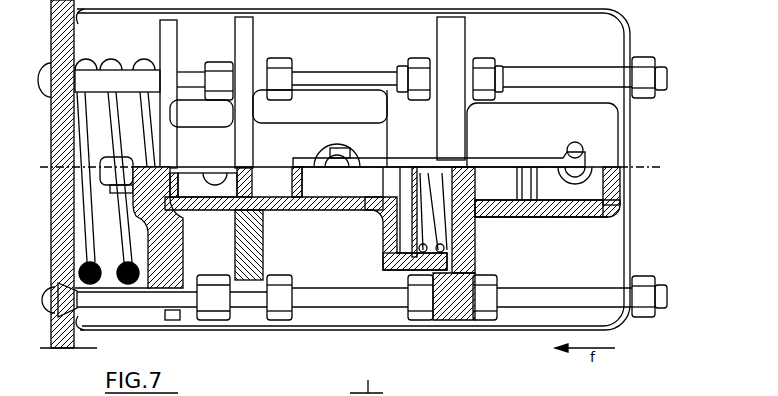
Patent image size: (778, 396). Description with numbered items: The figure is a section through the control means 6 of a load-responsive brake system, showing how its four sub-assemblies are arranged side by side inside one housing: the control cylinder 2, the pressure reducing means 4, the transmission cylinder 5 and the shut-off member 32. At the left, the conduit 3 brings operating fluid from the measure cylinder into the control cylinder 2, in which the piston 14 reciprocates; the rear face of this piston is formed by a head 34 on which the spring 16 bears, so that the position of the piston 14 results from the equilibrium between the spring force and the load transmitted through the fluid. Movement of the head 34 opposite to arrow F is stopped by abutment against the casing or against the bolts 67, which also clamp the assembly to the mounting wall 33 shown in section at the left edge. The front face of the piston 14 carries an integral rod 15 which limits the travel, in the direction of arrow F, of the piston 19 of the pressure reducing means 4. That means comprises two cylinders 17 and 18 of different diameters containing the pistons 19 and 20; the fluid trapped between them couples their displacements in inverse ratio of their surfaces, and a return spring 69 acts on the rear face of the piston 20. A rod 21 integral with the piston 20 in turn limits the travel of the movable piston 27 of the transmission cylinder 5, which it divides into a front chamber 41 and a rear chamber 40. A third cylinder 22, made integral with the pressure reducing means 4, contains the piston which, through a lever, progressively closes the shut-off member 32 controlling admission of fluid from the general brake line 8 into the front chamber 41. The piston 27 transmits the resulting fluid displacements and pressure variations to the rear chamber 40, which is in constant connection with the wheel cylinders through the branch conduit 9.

The control cylinder 2 is at (200, 184).
The conduit 3 is at (220, 204).
The pressure reducing means 4 is at (368, 212).
The transmission cylinder 5 is at (528, 200).
The control means 6 is at (603, 33).
The general brake line 8 is at (586, 172).
The branch conduit 9 is at (496, 168).
The piston 14 is at (157, 167).
The rod 15 is at (268, 172).
The spring 16 is at (114, 56).
The cylinder 17 is at (338, 188).
The cylinder 18 is at (432, 252).
The piston 19 is at (298, 199).
The piston 20 is at (408, 238).
The rod 21 is at (480, 182).
The third cylinder 22 is at (323, 153).
The movable piston 27 is at (548, 216).
The shut-off member 32 is at (583, 156).
The mounting wall 33 is at (50, 5).
The head 34 is at (178, 48).
The rear chamber 40 is at (500, 200).
The front chamber 41 is at (586, 200).
The bolts 67 is at (220, 321).
The spring 69 is at (468, 321).